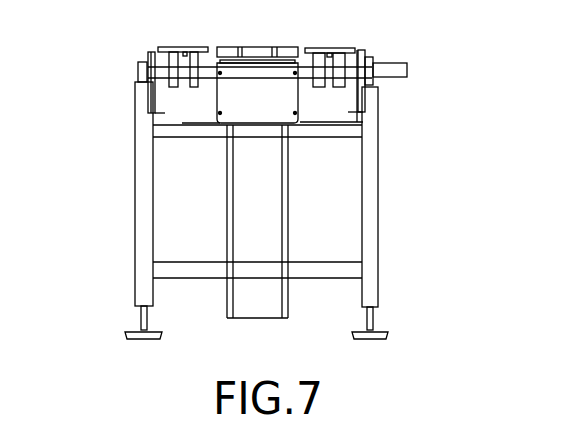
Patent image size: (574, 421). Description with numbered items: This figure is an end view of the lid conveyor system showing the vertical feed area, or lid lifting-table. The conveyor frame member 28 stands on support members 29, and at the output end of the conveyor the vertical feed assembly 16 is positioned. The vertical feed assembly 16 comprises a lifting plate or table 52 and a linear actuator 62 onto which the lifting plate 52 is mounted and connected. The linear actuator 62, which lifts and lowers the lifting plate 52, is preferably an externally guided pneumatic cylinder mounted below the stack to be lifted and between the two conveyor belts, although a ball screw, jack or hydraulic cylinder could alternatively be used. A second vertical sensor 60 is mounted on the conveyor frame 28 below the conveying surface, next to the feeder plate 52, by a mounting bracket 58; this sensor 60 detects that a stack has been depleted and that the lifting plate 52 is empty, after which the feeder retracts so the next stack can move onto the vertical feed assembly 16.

The vertical feed assembly 16 is at (293, 210).
The frame member 28 is at (145, 80).
The support members 29 is at (378, 288).
The lifting plate 52 is at (232, 47).
The mounting bracket 58 is at (288, 95).
The second vertical sensor 60 is at (282, 50).
The linear actuator 62 is at (263, 248).